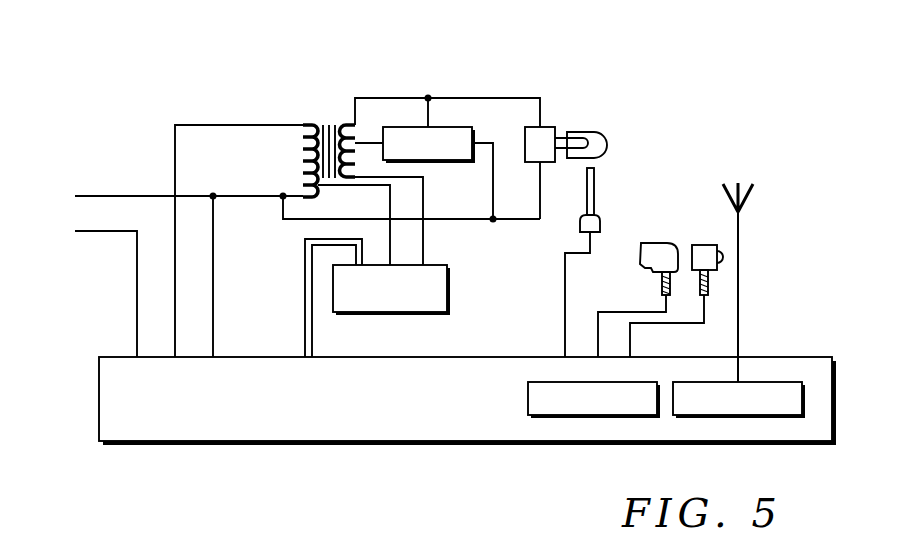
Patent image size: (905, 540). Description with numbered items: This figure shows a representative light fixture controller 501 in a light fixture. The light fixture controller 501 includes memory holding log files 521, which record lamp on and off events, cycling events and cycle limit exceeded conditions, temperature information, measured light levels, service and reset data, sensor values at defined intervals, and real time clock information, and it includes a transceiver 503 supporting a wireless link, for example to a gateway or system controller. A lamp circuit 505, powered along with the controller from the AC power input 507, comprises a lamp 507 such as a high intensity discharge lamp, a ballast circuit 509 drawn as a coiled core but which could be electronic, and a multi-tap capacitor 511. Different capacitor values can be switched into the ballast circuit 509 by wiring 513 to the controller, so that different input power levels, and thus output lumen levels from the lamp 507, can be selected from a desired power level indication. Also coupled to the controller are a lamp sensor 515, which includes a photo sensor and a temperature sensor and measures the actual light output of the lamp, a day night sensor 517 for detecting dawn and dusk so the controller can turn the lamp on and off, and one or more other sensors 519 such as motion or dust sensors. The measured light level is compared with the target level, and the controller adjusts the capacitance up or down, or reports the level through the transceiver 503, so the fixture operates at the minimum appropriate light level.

The light fixture controller 501 is at (780, 357).
The transceiver 503 is at (706, 416).
The lamp circuit 505 is at (459, 87).
The AC power input 507 is at (97, 186).
The ballast circuit 509 is at (328, 116).
The multi-tap capacitor 511 is at (452, 283).
The capacitor control wiring 513 is at (305, 290).
The lamp sensor 515 is at (600, 222).
The day night sensor 517 is at (660, 243).
The other sensors 519 is at (705, 245).
The log files 521 is at (557, 416).